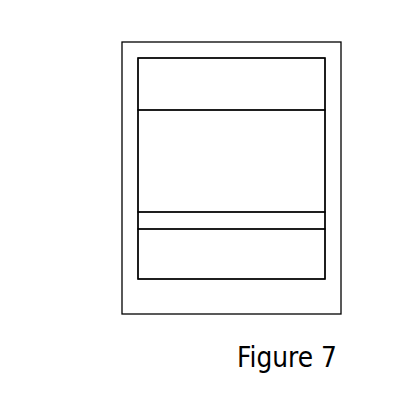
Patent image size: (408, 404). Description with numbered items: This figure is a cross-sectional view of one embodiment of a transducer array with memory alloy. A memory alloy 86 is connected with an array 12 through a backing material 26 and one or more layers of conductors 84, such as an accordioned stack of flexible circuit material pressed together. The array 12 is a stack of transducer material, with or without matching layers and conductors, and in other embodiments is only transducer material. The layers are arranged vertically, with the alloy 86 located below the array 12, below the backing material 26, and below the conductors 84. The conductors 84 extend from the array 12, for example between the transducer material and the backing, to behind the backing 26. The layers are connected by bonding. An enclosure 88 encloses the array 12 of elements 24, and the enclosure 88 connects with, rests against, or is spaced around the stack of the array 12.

The array 12 is at (138, 84).
The elements 24 is at (231, 58).
The backing material 26 is at (138, 161).
The conductors 84 is at (138, 221).
The memory alloy 86 is at (138, 253).
The enclosure 88 is at (229, 314).